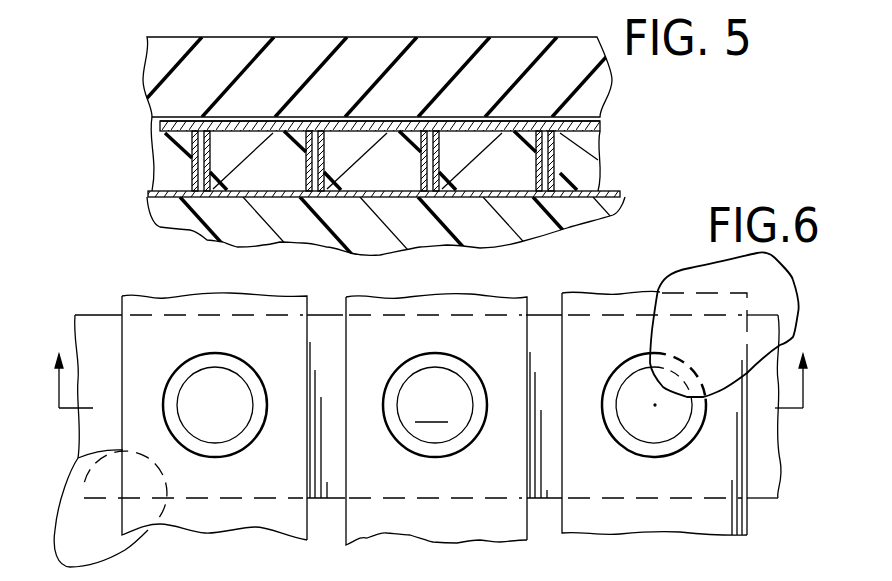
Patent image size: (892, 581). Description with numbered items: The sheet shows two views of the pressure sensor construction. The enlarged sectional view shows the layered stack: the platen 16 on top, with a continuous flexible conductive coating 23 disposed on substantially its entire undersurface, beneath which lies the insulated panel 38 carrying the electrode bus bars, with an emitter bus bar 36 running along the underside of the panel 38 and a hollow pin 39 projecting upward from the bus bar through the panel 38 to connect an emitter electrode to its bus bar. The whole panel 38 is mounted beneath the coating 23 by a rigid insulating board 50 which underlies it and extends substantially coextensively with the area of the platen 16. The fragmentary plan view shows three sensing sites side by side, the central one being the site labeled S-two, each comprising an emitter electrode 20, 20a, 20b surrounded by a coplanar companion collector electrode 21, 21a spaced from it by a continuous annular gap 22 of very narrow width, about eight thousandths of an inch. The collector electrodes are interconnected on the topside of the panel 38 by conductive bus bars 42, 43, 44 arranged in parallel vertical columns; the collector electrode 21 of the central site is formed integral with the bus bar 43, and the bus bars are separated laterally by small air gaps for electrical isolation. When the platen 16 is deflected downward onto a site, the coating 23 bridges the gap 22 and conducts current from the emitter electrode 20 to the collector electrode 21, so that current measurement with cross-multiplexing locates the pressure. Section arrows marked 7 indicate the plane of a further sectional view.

In FIG. 5, the platen 16 is at (447, 53).
In FIG. 6, the platen 16 is at (723, 273).
In FIG. 5, the conductive coating 23 is at (162, 122).
In FIG. 5, the hollow pin 39 is at (592, 136).
In FIG. 5, the insulated panel 38 is at (580, 163).
In FIG. 6, the insulated panel 38 is at (105, 543).
In FIG. 5, the bus bar 36 is at (685, 204).
In FIG. 6, the bus bar 36 is at (105, 325).
In FIG. 5, the rigid insulating board 50 is at (580, 215).
In FIG. 6, the bus bar 44 is at (270, 517).
In FIG. 6, the bus bar 43 is at (412, 518).
In FIG. 6, the bus bar 42 is at (673, 517).
In FIG. 6, the emitter electrode 20b is at (238, 417).
In FIG. 6, the emitter electrode 20 is at (457, 388).
In FIG. 6, the annular gap 22 is at (492, 432).
In FIG. 6, the emitter electrode 20a is at (648, 428).
In FIG. 6, the collector electrode 21 is at (362, 480).
In FIG. 6, the collector electrode 21a is at (567, 460).
In FIG. 6, the section line 7- 7 is at (431, 376).